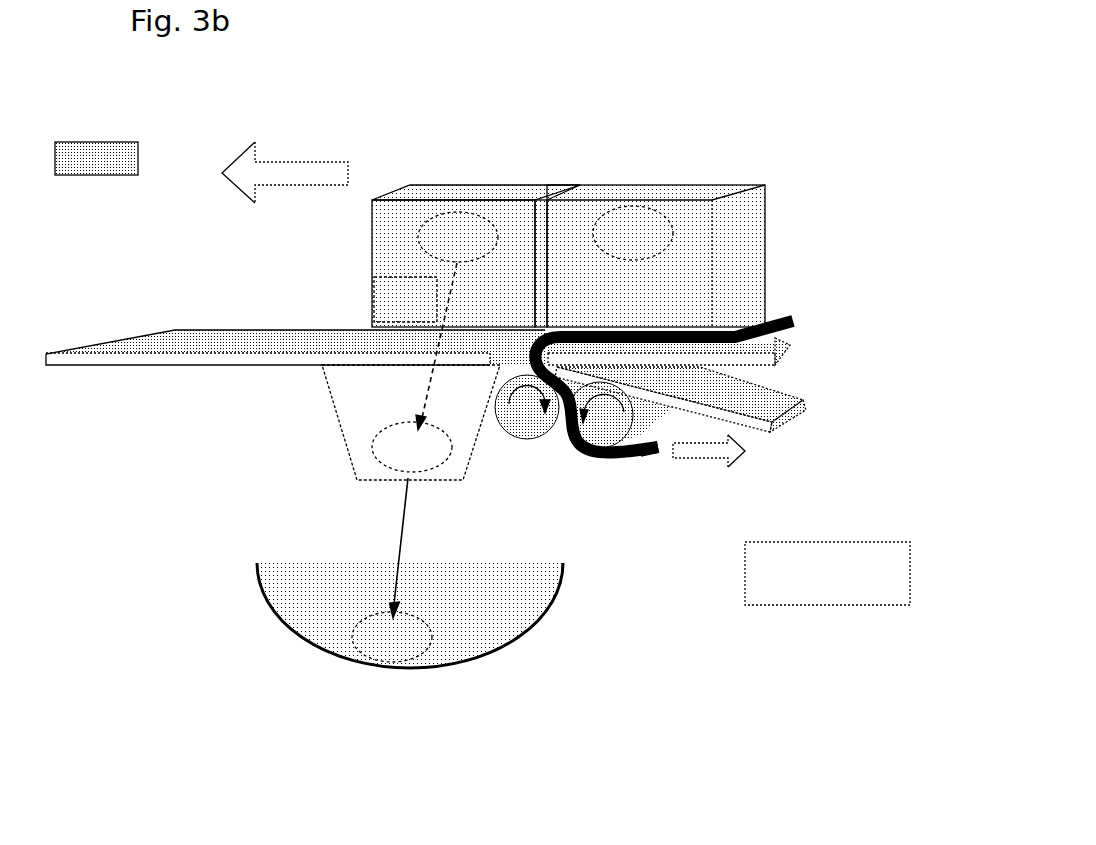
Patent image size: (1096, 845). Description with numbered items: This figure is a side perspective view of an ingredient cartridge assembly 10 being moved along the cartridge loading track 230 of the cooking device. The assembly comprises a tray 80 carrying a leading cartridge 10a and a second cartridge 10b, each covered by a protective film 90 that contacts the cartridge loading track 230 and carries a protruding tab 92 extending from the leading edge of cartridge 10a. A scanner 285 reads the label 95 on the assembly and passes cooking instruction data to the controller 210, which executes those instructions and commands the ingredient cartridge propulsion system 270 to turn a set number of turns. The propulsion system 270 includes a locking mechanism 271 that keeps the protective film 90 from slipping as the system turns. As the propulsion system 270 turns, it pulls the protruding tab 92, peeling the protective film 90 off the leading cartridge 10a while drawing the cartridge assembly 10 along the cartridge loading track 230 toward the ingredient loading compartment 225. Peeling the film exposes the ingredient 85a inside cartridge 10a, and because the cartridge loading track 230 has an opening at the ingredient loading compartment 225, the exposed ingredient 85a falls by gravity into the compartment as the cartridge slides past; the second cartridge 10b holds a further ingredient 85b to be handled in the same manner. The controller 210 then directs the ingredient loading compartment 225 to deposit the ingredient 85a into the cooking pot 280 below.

The ingredient cartridge assembly 10 is at (783, 118).
The cartridge 10a is at (582, 188).
The second print head unit 10b is at (760, 188).
The tray 80 is at (395, 249).
The ingredient 85a is at (445, 236).
The second nozzle / jet region 85b is at (665, 228).
The protective film 90 is at (792, 321).
The protruding tab 92 is at (660, 455).
The label 95 is at (388, 297).
The controller 210 is at (827, 573).
The ingredient loading compartment 225 is at (355, 409).
The cartridge loading track 230 is at (195, 340).
The ingredient cartridge propulsion system 270 is at (527, 407).
The locking mechanism 271 is at (605, 415).
The cooking pot 280 is at (263, 605).
The scanner 285 is at (96, 158).